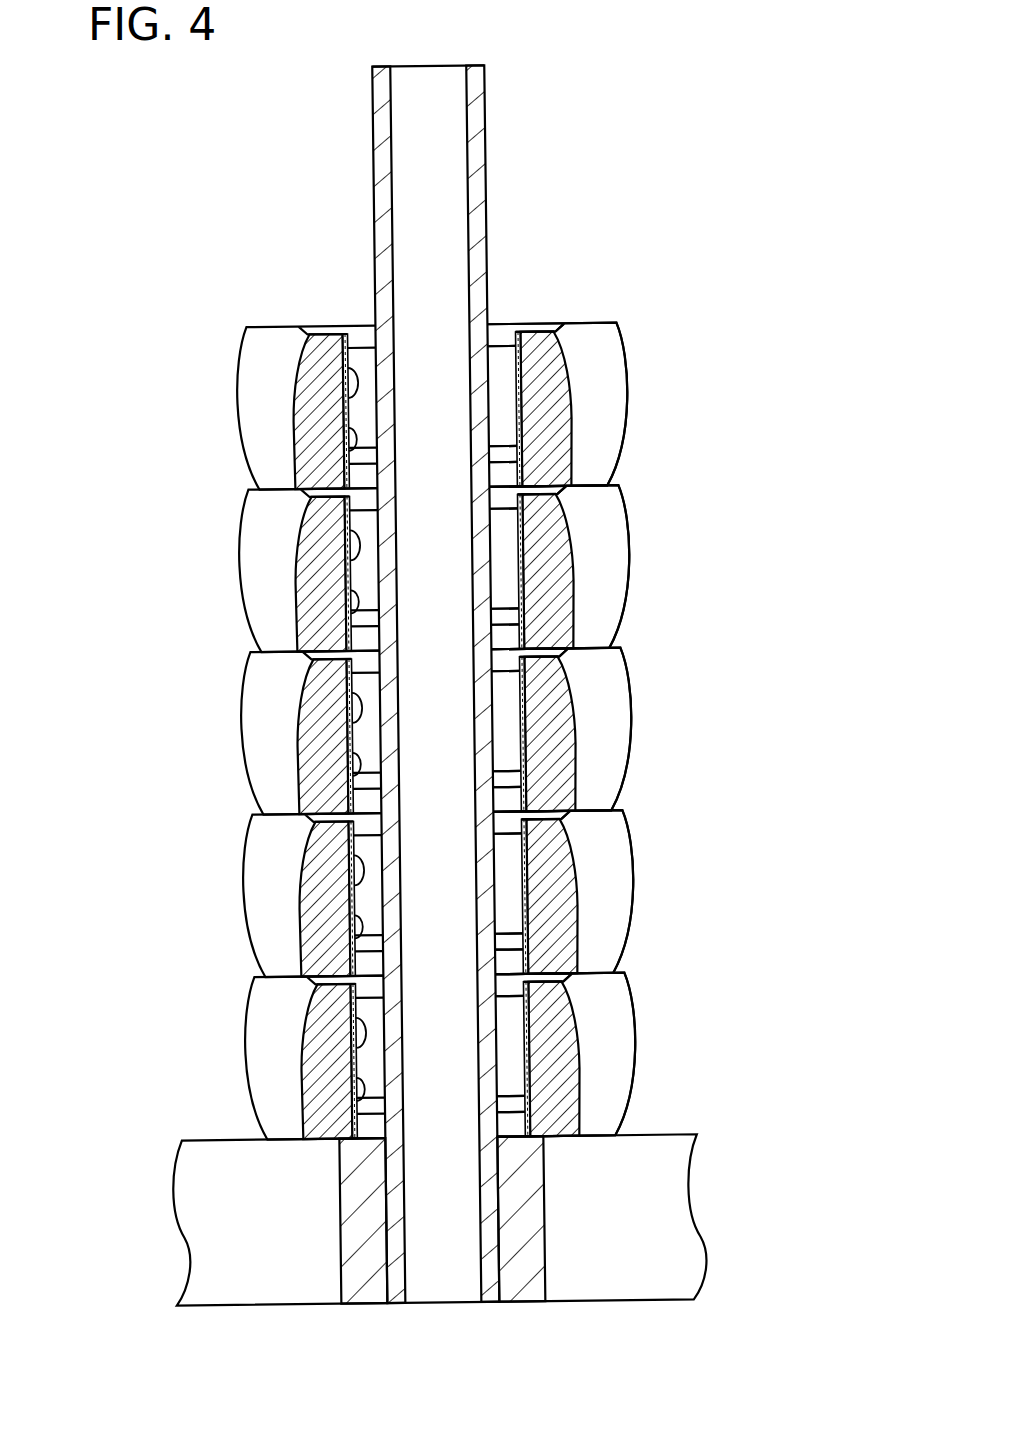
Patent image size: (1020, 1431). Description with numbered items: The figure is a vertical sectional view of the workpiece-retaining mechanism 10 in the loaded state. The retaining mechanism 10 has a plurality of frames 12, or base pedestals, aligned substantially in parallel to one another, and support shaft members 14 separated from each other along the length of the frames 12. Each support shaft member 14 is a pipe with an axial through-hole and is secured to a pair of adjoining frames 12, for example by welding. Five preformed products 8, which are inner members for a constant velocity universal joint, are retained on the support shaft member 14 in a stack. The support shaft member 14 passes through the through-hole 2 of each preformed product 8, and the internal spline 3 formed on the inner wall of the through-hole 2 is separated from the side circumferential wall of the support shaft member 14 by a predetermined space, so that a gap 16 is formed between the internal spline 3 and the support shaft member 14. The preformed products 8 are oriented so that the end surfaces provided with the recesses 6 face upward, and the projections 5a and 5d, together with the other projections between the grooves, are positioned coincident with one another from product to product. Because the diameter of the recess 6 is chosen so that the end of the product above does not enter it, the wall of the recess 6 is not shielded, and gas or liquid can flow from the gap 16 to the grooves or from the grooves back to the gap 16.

The workpiece-retaining mechanism 10 is at (190, 135).
The support shaft member 14 is at (484, 172).
The frame 12 is at (233, 1278).
The preformed product 8 is at (627, 383).
The projection 5a is at (603, 432).
The projection 5d is at (262, 413).
The internal spline 3 is at (337, 361).
The through-hole 2 is at (332, 424).
The gap 16 is at (505, 396).
The recess 6 is at (505, 335).